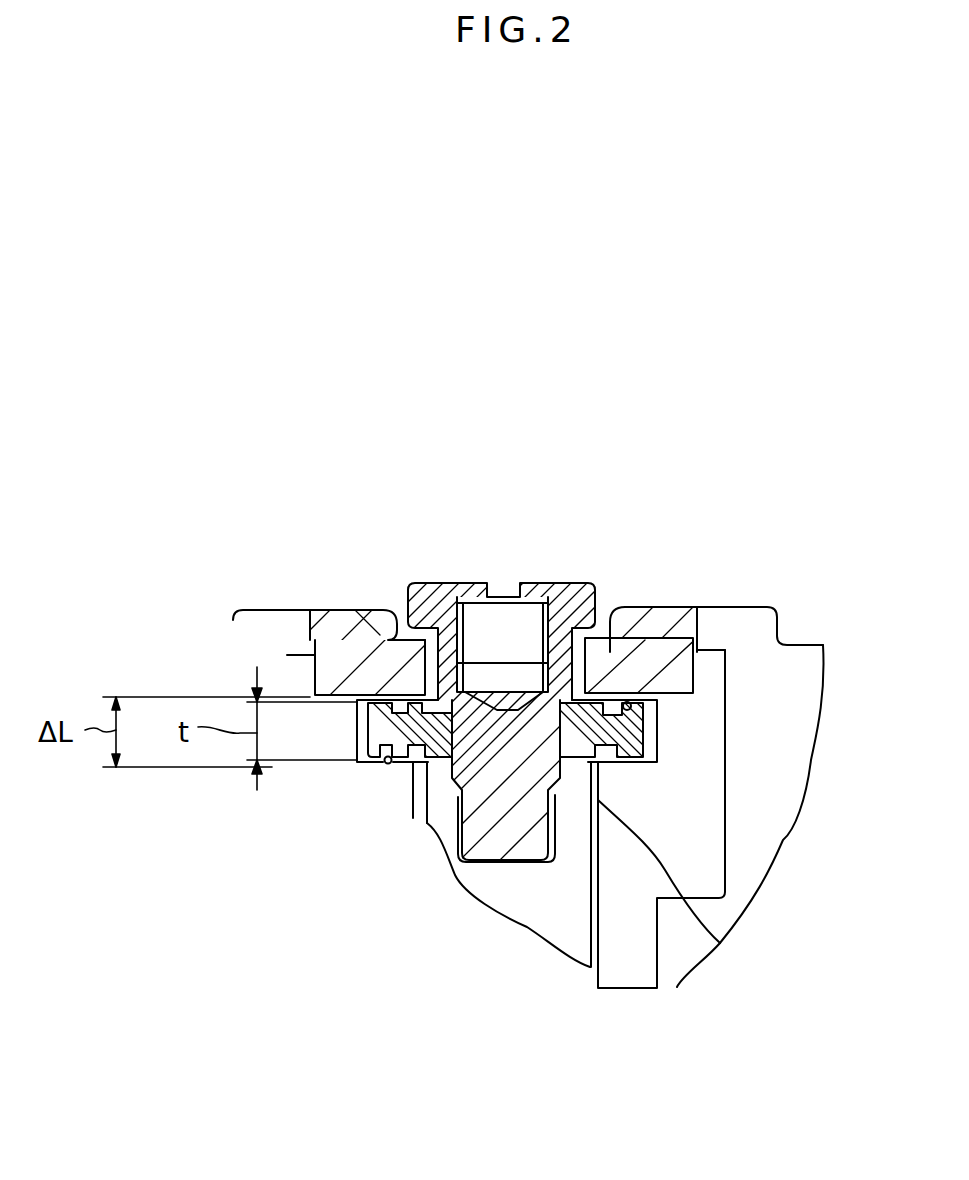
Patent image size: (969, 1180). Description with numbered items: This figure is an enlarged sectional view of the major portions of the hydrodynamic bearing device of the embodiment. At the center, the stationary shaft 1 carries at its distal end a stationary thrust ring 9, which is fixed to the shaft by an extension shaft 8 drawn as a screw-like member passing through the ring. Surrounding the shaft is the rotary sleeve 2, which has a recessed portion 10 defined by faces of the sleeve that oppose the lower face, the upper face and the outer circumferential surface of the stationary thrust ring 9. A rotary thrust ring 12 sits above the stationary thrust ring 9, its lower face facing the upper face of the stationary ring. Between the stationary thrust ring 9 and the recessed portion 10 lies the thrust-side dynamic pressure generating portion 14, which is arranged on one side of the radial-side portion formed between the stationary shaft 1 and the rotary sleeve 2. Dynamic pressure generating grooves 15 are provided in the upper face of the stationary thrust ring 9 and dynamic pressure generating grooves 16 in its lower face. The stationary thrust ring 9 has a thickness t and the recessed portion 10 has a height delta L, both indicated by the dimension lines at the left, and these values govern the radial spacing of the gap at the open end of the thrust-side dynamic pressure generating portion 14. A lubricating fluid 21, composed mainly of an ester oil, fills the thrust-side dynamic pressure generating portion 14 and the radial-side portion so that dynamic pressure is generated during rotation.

The stationary shaft 1 is at (545, 913).
The rotary sleeve 2 is at (783, 793).
The extension shaft 8 is at (442, 590).
The stationary thrust ring 9 is at (650, 607).
The recessed portion 10 is at (402, 767).
The rotary thrust ring 12 is at (685, 658).
The thrust-side dynamic pressure generating portion 14 is at (377, 693).
The dynamic pressure generating grooves 15 is at (650, 700).
The dynamic pressure generating grooves 16 is at (623, 760).
The lubricating fluid 21 is at (720, 943).